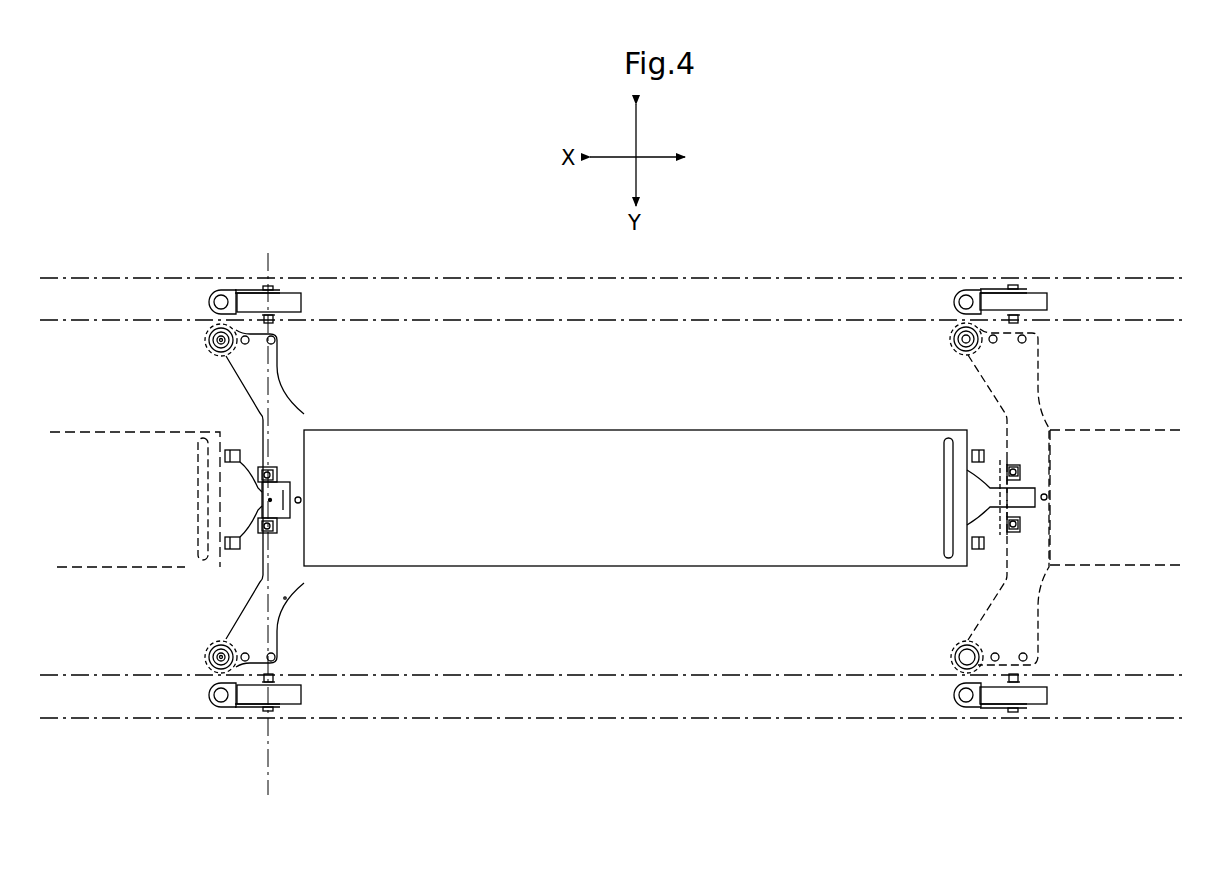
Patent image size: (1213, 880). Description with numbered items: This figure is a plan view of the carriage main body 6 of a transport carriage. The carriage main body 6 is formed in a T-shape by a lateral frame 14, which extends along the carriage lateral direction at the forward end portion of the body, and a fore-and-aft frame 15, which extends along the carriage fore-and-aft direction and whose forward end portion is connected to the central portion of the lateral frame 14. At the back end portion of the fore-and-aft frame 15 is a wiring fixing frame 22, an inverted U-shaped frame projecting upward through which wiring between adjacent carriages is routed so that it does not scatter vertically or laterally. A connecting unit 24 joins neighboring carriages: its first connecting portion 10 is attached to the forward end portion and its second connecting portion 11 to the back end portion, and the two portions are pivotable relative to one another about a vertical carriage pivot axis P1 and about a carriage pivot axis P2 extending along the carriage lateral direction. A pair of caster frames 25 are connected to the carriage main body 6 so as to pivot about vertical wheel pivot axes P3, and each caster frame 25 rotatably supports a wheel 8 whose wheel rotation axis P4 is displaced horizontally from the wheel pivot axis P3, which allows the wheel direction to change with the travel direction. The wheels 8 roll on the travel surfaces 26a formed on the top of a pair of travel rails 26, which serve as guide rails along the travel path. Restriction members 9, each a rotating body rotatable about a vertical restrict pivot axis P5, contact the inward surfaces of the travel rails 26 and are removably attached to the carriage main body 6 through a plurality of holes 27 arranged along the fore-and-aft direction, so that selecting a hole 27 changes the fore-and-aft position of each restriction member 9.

The carriage main body 6 is at (616, 420).
The wheel 8 is at (291, 299).
The restriction member 9 is at (214, 340).
The first connecting portion 10 is at (278, 470).
The second connecting portion 11 is at (262, 492).
The lateral frame 14 is at (298, 400).
The fore-and-aft frame 15 is at (120, 432).
The wiring fixing frame 22 is at (944, 481).
The connecting unit 24 is at (604, 499).
The caster frame 25 is at (255, 291).
The travel rail 26 is at (756, 278).
The travel surface 26a is at (520, 303).
The hole 27 is at (273, 345).
The carriage pivot axis P1 is at (272, 501).
The carriage pivot axis P2 is at (286, 598).
The wheel pivot axis P3 is at (209, 302).
The wheel rotation axis P4 is at (275, 527).
The restrict pivot axis P5 is at (225, 356).